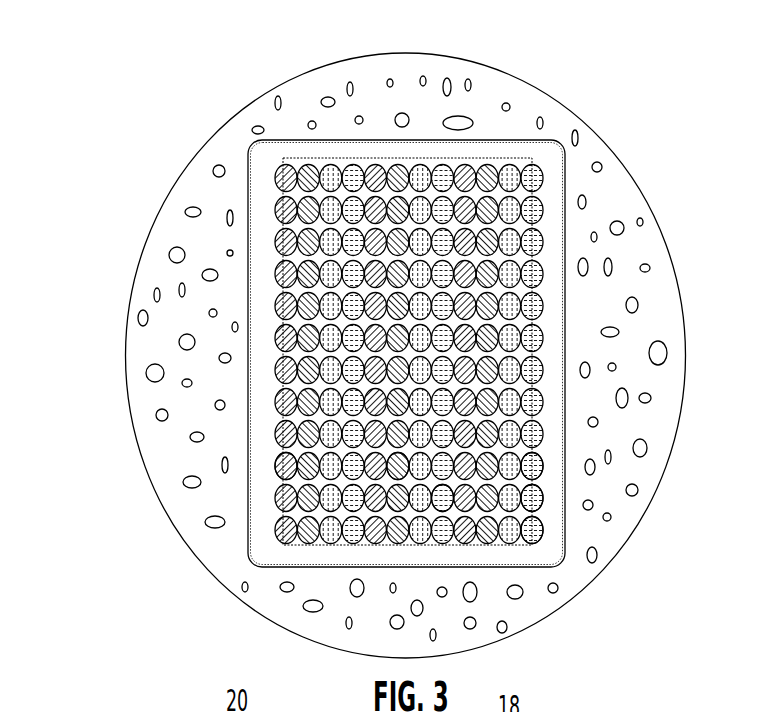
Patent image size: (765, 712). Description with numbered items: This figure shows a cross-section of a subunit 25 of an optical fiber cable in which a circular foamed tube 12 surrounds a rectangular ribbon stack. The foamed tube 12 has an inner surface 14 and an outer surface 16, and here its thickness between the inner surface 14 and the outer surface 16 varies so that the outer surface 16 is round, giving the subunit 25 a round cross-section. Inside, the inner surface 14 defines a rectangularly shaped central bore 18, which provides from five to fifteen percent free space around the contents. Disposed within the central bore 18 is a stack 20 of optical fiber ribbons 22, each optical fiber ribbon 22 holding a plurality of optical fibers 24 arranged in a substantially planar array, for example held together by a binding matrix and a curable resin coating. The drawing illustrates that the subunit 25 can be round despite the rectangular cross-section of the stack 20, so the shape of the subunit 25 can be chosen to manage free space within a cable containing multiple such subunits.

The foamed tube 12 is at (180, 227).
The inner surface 14 is at (250, 378).
The outer surface 16 is at (642, 193).
The central bore 18 is at (508, 150).
The stack 20 is at (332, 157).
The optical fiber ribbon 22 is at (543, 466).
The optical fiber 24 is at (432, 500).
The subunit 25 is at (122, 133).